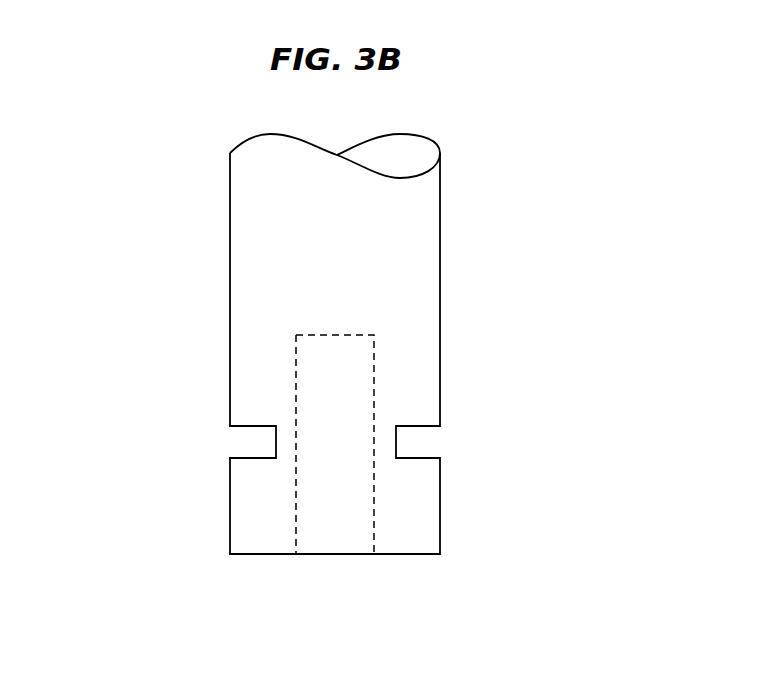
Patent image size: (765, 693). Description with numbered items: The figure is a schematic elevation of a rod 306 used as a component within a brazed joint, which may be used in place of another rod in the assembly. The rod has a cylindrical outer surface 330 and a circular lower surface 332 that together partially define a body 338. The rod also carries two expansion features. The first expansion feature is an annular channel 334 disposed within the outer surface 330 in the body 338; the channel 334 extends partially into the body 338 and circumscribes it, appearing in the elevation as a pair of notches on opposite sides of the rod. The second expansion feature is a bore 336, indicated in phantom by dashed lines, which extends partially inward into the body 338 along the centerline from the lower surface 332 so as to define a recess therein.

The rod 306 is at (185, 138).
The cylindrical outer surface 330 is at (493, 245).
The circular lower surface 332 is at (403, 565).
The annular channel 334 is at (425, 443).
The bore 336 is at (363, 373).
The body 338 is at (258, 242).